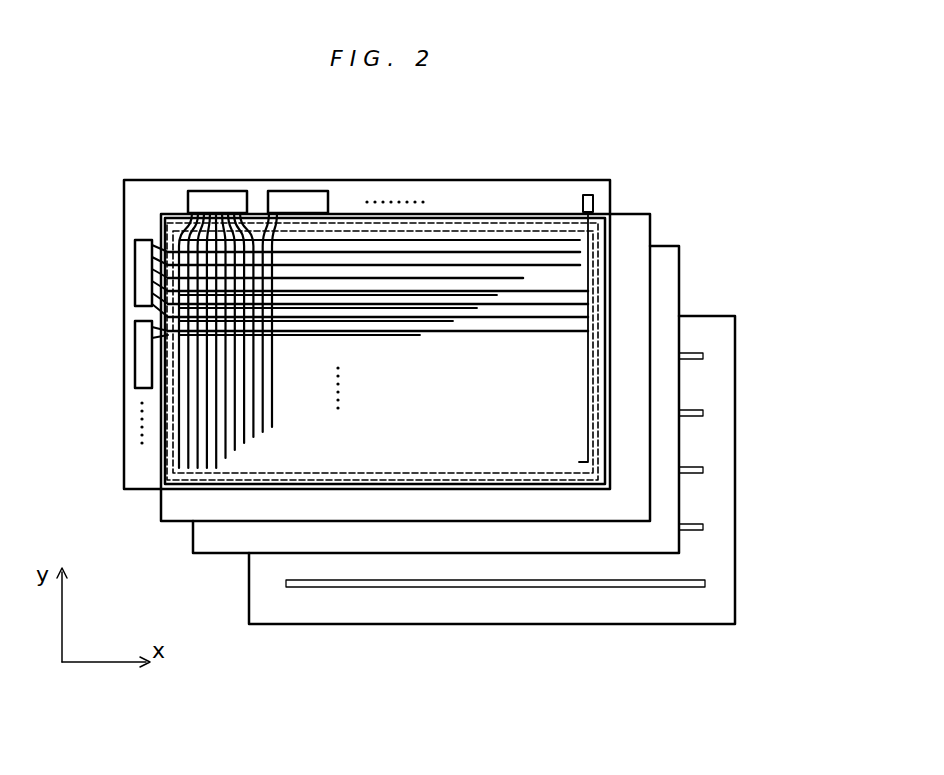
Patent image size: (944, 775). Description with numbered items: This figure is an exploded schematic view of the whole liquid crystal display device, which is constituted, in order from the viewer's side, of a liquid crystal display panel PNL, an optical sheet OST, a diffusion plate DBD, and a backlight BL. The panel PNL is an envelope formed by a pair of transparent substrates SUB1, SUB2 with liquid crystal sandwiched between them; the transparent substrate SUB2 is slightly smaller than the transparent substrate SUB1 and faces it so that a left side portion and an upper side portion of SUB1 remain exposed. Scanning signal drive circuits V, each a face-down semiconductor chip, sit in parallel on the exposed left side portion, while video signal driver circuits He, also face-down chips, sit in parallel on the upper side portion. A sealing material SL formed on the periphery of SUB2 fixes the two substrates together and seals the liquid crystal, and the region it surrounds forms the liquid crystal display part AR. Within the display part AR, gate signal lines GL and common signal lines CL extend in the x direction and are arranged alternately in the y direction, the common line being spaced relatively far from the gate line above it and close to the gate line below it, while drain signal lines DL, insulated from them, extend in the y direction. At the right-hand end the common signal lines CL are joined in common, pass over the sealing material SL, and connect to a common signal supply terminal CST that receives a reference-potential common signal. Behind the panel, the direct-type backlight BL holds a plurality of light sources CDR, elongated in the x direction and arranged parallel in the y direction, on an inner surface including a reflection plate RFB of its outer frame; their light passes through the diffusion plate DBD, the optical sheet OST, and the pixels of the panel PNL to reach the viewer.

The transparent substrate SUB1 is at (405, 180).
The transparent substrate SUB2 is at (160, 448).
The optical sheet OST is at (639, 231).
The diffusion plate DBD is at (672, 286).
The backlight BL is at (754, 477).
The light source CDR is at (693, 413).
The reflection plate RFB is at (720, 543).
The liquid crystal display panel PNL is at (557, 160).
The liquid crystal display part AR is at (385, 382).
The common signal supply terminal CST is at (593, 203).
The video signal driver circuit He is at (220, 191).
The drain signal line DL is at (238, 398).
The gate signal line GL is at (460, 252).
The common signal line CL is at (543, 318).
The scanning signal drive circuit V is at (135, 272).
The sealing material SL is at (177, 478).